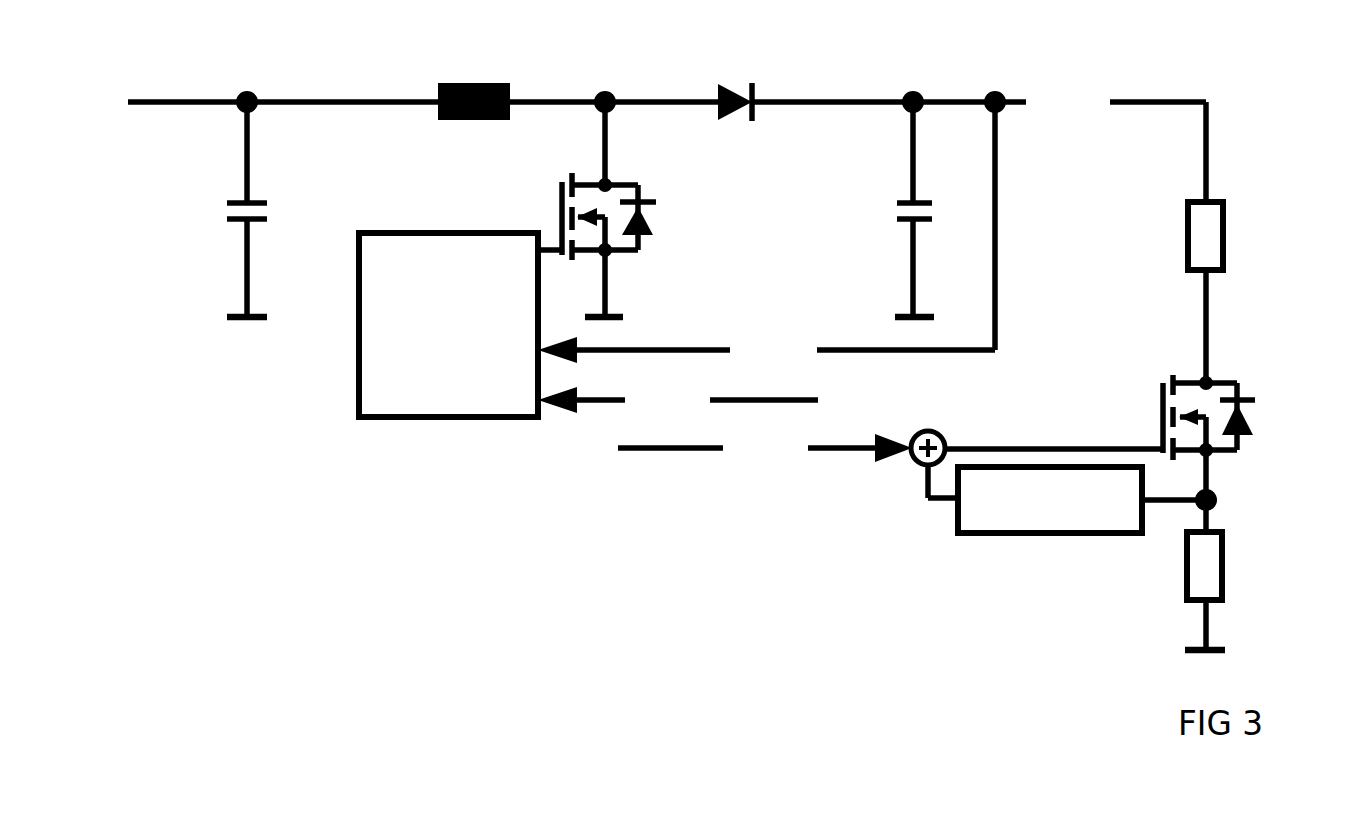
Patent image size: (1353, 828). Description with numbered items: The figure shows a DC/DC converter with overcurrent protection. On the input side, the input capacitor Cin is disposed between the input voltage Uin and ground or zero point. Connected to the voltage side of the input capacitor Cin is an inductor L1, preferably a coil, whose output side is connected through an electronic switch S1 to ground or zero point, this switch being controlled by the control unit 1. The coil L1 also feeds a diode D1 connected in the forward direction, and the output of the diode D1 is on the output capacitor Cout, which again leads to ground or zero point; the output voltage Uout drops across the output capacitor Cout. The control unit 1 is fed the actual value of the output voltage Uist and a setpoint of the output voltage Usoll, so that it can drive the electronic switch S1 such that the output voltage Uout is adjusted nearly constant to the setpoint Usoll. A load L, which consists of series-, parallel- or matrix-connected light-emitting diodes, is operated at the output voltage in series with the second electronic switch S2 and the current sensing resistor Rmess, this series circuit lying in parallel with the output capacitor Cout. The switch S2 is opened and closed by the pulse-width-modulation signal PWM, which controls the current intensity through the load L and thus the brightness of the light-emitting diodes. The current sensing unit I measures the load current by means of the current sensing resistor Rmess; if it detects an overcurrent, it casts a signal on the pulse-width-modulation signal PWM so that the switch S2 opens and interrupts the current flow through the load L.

The control unit 1 is at (405, 382).
The input voltage Uin is at (247, 105).
The input capacitor Cin is at (212, 209).
The inductor L1 is at (578, 76).
The diode D1 is at (869, 126).
The electronic switch S1 is at (630, 209).
The output capacitor Cout is at (876, 209).
The output voltage Uout is at (1119, 141).
The load L is at (1219, 292).
The second electronic switch S2 is at (1222, 436).
The current sensing resistor Rmess is at (1259, 591).
The actual value of the output voltage Uist is at (766, 234).
The setpoint of the output voltage Usoll is at (678, 398).
The pulse-width-modulation signal PWM is at (890, 448).
The current sensing unit I is at (1067, 499).